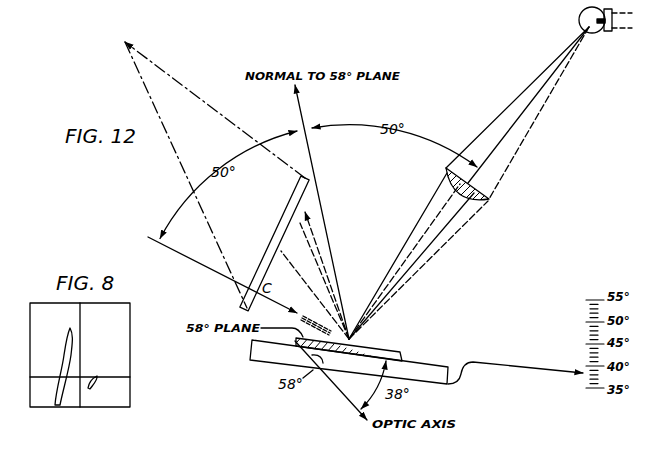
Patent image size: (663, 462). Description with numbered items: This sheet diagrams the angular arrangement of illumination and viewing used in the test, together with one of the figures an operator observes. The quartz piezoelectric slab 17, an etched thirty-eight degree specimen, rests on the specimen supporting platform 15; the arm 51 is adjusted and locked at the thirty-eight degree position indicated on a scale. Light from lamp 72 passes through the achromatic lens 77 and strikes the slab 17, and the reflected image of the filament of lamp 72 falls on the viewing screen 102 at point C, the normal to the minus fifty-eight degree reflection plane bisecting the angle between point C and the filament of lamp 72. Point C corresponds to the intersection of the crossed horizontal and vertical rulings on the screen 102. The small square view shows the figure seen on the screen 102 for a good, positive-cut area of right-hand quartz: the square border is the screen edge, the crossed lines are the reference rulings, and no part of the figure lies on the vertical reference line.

The lamp 72 is at (579, 17).
The achromatic lens 77 is at (496, 198).
The viewing screen 102 is at (303, 185).
The quartz piezoelectric slab 17 is at (391, 347).
The specimen supporting platform 15 is at (415, 363).
The arm 51 is at (530, 366).